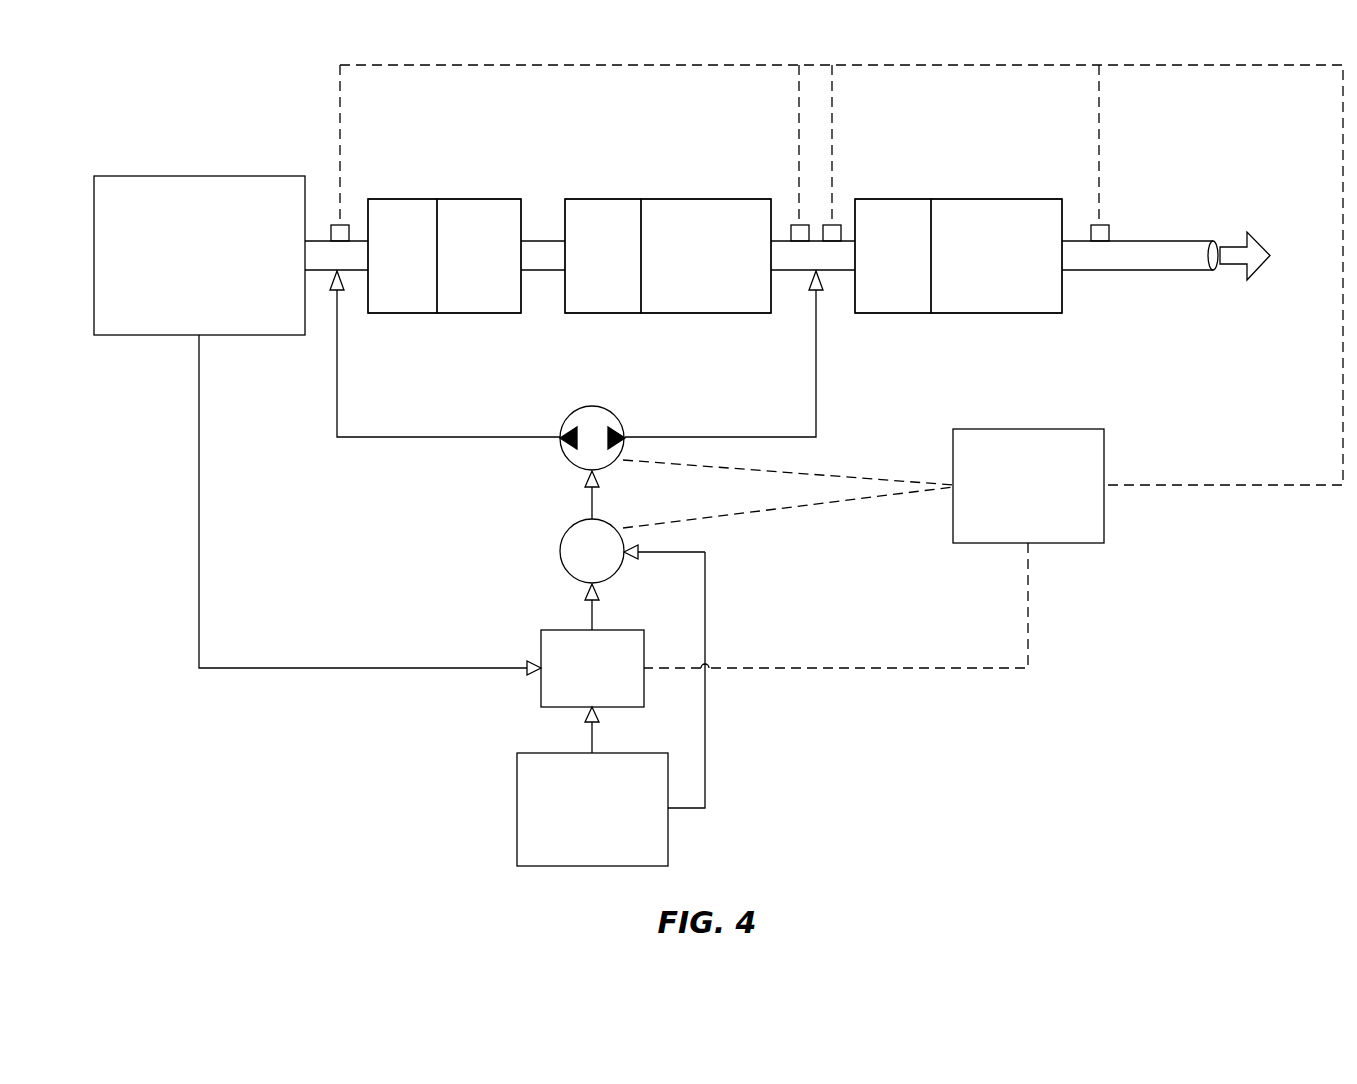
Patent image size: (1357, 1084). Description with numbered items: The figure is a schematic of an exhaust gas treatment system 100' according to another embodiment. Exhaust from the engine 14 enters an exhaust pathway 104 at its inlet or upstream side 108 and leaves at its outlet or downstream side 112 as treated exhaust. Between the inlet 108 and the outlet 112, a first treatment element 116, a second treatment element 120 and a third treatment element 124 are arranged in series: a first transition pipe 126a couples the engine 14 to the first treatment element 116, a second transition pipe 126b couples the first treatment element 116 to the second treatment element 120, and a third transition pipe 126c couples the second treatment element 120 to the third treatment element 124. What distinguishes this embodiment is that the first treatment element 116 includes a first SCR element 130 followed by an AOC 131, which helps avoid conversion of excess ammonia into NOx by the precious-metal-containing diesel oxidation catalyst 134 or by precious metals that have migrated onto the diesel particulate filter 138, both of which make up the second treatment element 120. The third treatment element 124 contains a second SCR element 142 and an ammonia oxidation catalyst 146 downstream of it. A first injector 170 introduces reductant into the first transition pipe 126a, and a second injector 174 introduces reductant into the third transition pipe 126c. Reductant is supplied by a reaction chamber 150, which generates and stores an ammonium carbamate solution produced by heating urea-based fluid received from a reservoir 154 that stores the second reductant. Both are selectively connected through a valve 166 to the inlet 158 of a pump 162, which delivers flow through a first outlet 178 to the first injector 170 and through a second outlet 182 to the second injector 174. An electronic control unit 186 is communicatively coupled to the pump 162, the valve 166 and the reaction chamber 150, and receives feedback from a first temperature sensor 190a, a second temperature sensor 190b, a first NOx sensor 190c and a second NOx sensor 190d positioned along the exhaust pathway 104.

The engine 14 is at (203, 175).
The inlet or upstream side 108 is at (307, 240).
The first temperature sensor 190a is at (340, 223).
The first treatment element 116 is at (449, 211).
The first selective catalytic reduction (SCR) element 130 is at (428, 197).
The AOC 131 is at (512, 197).
The exhaust pathway 104 is at (570, 160).
The first transition pipe 126a is at (357, 270).
The first injector 170 is at (337, 292).
The second transition pipe 126b is at (547, 270).
The second treatment element 120 is at (668, 257).
The diesel oxidation catalyst (DOC) 134 is at (600, 313).
The diesel particulate filter (DPF) 138 is at (703, 313).
The first NOx sensor 190c is at (800, 225).
The second temperature sensor 190b is at (832, 225).
The second injector 174 is at (816, 292).
The third transition pipe 126c is at (840, 270).
The third treatment element 124 is at (958, 262).
The second SCR element 142 is at (893, 313).
The ammonia oxidation catalyst (AOC) 146 is at (995, 313).
The second NOx sensor 190d is at (1100, 225).
The outlet or downstream side 112 is at (1217, 247).
The pump 162 is at (589, 457).
The first outlet 178 is at (562, 438).
The second outlet 182 is at (625, 438).
The inlet 158 is at (588, 474).
The valve 166 is at (560, 552).
The electronic control unit 186 is at (952, 518).
The reaction chamber 150 is at (540, 688).
The reservoir 154 is at (517, 808).
The exhaust gas treatment system 100' is at (1048, 763).